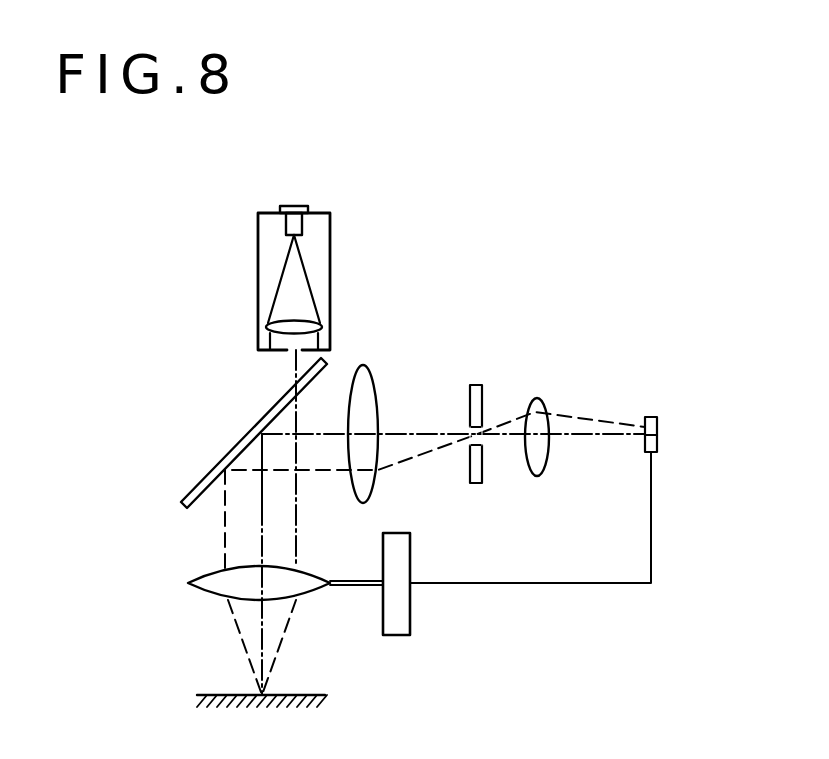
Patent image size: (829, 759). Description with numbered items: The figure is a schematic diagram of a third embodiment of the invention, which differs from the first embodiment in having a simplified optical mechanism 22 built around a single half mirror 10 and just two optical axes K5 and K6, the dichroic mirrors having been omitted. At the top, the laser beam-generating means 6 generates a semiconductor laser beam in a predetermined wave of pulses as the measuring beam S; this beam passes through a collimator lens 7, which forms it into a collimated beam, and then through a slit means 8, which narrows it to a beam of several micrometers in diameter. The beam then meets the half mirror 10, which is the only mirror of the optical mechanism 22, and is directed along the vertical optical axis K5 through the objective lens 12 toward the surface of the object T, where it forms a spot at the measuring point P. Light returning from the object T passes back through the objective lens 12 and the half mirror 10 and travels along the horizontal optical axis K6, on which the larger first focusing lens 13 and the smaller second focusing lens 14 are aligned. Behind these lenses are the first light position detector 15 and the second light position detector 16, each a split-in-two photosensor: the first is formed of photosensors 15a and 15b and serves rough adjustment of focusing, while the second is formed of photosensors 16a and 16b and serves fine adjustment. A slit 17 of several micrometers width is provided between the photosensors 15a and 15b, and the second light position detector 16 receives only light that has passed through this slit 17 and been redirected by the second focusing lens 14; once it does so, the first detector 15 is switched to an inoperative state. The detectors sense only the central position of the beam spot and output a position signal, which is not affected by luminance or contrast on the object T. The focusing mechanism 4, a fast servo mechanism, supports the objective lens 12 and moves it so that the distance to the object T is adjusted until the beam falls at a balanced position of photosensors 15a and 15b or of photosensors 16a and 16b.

The focusing mechanism 4 is at (400, 636).
The laser beam-generating means 6 is at (296, 206).
The collimator lens 7 is at (282, 322).
The slit means 8 is at (285, 346).
The half mirror 10 is at (205, 472).
The objective lens 12 is at (210, 597).
The first focusing lens 13 is at (362, 365).
The second focusing lens 14 is at (540, 400).
The first light position detector 15 is at (470, 434).
The photosensor 15a is at (478, 483).
The photosensor 15b is at (478, 385).
The second light position detector 16 is at (669, 430).
The photosensor 16a is at (648, 451).
The photosensor 16b is at (650, 417).
The slit 17 is at (472, 443).
The optical mechanism 22 is at (152, 569).
The measuring beam S is at (280, 267).
The optical axis K5 is at (258, 543).
The optical axis K6 is at (420, 432).
The measuring point P is at (263, 697).
The object T is at (218, 694).